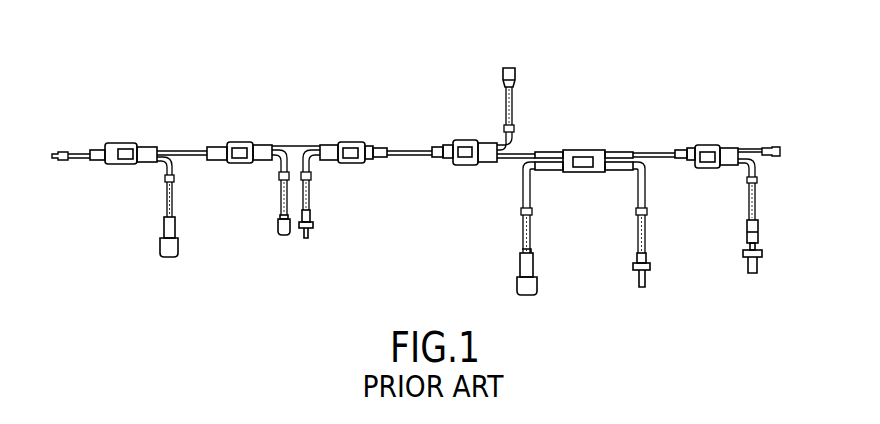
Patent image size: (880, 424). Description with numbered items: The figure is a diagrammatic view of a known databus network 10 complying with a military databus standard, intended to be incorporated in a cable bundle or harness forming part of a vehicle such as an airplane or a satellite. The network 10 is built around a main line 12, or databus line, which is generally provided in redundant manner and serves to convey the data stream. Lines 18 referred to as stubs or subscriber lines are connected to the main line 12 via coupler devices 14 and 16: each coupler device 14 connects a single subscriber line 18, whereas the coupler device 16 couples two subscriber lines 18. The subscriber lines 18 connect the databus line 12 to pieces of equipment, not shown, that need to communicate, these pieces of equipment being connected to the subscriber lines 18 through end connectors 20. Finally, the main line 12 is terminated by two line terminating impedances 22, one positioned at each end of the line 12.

The databus network 10 is at (325, 77).
The main line 12 is at (192, 152).
The coupler device 14 is at (123, 152).
The coupler device 16 is at (585, 150).
The subscriber line 18 is at (280, 188).
The end connector 20 is at (168, 248).
The line terminating impedance 22 is at (57, 150).